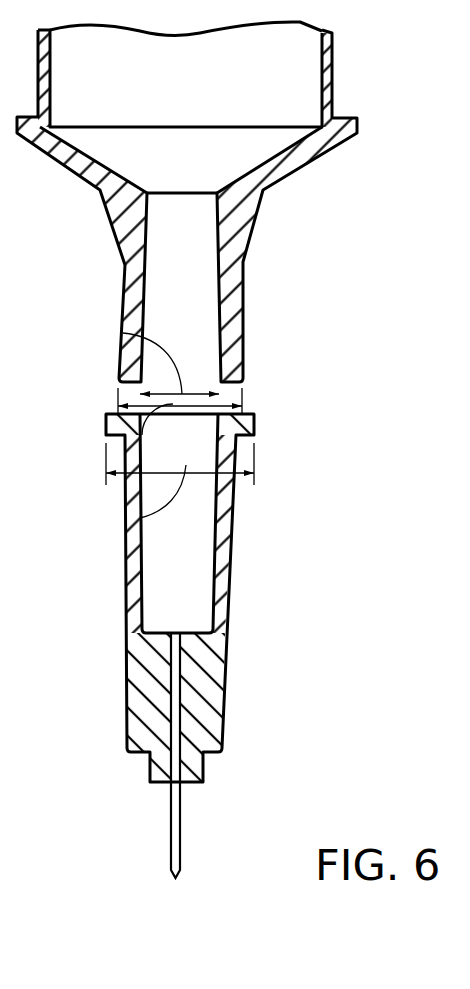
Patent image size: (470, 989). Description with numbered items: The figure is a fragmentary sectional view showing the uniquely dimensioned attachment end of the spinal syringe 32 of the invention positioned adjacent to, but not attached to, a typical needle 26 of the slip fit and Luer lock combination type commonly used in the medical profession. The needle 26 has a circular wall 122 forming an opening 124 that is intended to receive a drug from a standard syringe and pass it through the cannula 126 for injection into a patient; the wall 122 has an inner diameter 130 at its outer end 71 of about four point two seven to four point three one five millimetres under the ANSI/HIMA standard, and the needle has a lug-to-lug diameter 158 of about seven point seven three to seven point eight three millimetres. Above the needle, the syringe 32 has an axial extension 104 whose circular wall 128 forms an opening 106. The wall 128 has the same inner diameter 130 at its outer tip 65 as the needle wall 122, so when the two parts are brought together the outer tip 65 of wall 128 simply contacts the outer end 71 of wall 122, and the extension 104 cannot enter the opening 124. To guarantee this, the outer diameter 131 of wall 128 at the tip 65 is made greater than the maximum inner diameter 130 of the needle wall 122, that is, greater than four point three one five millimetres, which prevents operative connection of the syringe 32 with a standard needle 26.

The syringe 32 is at (205, 208).
The axial extension 104 is at (228, 268).
The opening 106 is at (180, 280).
The circular wall 128 is at (232, 340).
The inner diameter 130 is at (123, 333).
The outer tip 65 is at (232, 392).
The outer end 71 is at (247, 412).
The needle 26 is at (184, 641).
The circular wall 122 is at (232, 497).
The opening 124 is at (175, 548).
The outer diameter 131 is at (128, 442).
The lug-to-lug diameter 158 is at (140, 518).
The cannula 126 is at (180, 838).